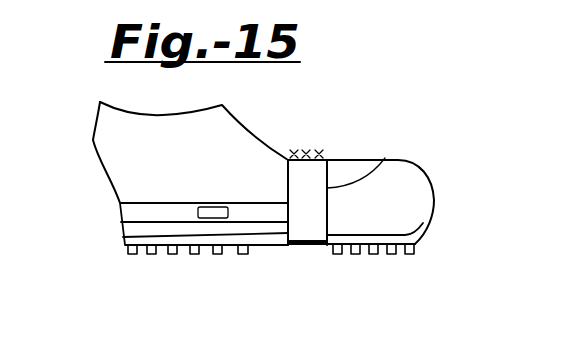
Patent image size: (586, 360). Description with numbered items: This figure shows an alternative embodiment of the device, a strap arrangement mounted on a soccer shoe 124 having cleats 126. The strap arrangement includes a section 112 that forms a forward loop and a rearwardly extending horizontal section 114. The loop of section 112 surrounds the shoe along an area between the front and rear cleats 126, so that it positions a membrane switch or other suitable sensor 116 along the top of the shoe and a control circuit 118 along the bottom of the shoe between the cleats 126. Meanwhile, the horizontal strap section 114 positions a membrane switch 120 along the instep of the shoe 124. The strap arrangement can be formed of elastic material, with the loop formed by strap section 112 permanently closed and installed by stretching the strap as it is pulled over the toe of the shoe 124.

The section forming a forward loop 112 is at (385, 158).
The rearwardly extending horizontal section 114 is at (158, 210).
The sensor 116 is at (292, 150).
The control circuit 118 is at (305, 245).
The membrane switch 120 is at (213, 216).
The soccer shoe 124 is at (95, 142).
The cleats 126 is at (128, 255).